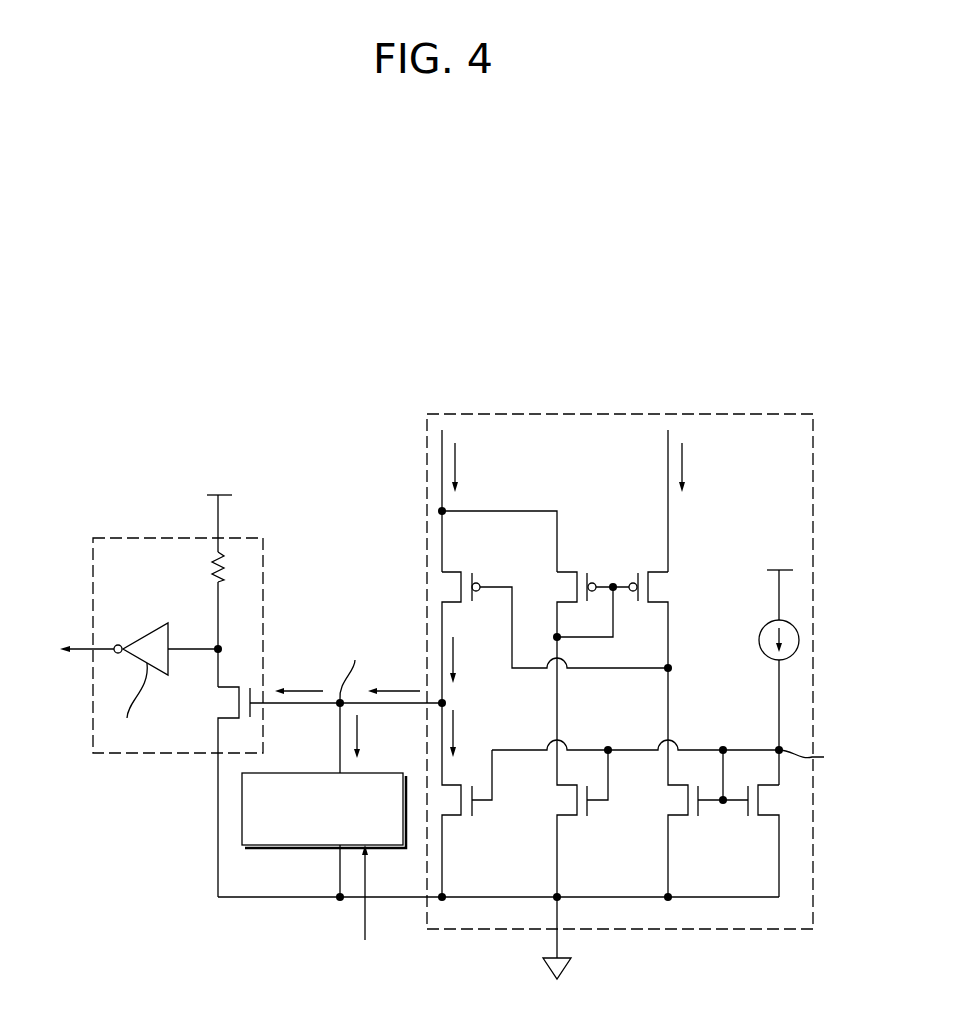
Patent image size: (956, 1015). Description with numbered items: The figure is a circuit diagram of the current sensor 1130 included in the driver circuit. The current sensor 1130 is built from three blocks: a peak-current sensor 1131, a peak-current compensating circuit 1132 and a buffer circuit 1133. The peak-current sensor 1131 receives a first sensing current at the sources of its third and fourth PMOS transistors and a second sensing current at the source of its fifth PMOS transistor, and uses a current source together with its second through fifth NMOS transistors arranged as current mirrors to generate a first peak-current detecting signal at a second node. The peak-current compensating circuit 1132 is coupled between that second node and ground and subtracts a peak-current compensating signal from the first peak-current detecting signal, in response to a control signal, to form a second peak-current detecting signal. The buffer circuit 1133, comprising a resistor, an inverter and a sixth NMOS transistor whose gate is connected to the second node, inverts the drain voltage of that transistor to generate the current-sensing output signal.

The current sensor 1130 is at (432, 328).
The peak-current sensor 1131 is at (595, 414).
The peak-current compensating circuit 1132 is at (242, 806).
The buffer circuit 1133 is at (152, 538).